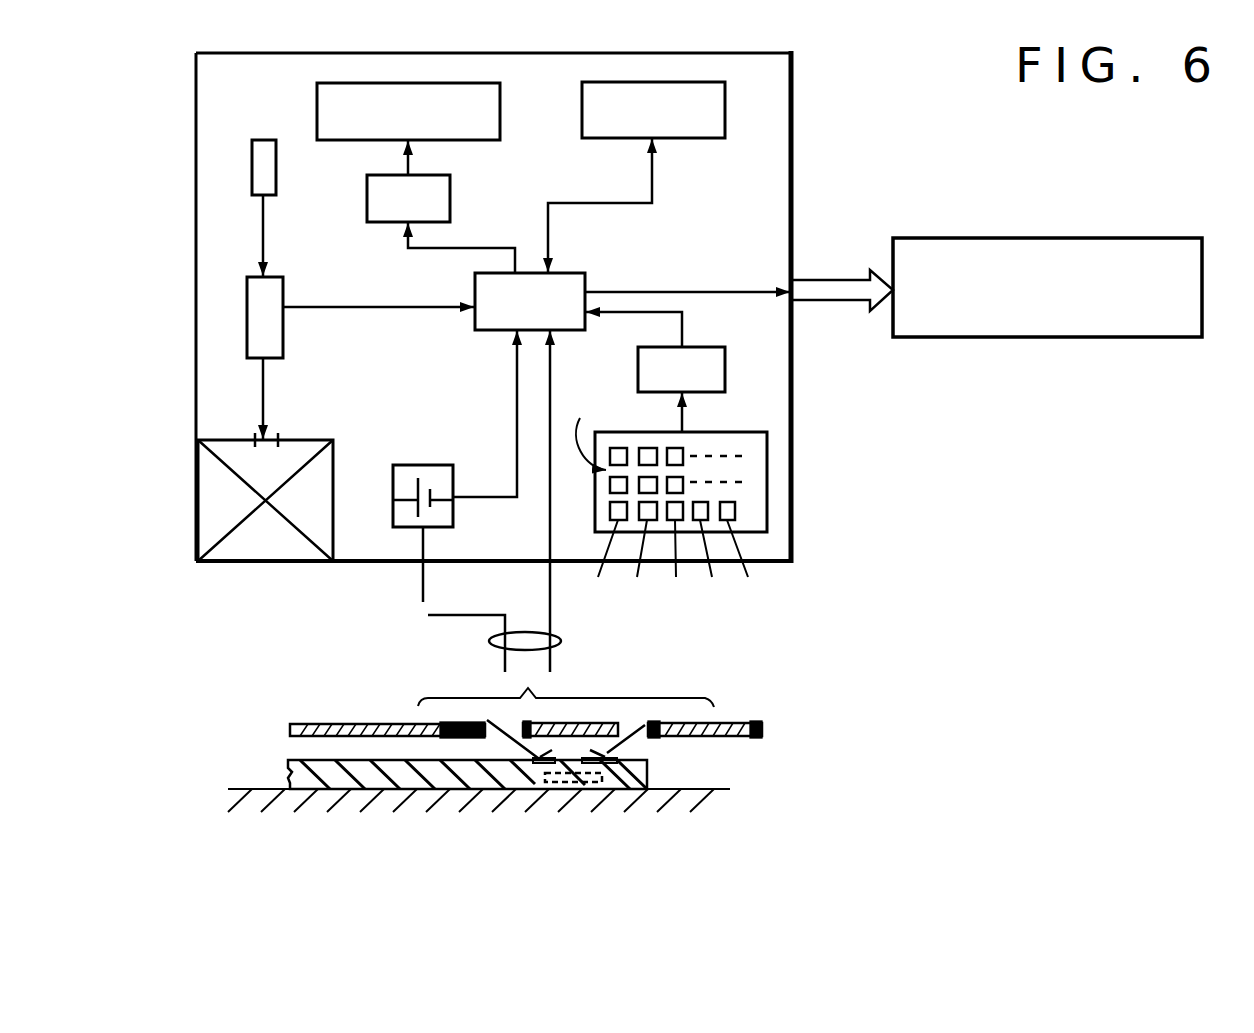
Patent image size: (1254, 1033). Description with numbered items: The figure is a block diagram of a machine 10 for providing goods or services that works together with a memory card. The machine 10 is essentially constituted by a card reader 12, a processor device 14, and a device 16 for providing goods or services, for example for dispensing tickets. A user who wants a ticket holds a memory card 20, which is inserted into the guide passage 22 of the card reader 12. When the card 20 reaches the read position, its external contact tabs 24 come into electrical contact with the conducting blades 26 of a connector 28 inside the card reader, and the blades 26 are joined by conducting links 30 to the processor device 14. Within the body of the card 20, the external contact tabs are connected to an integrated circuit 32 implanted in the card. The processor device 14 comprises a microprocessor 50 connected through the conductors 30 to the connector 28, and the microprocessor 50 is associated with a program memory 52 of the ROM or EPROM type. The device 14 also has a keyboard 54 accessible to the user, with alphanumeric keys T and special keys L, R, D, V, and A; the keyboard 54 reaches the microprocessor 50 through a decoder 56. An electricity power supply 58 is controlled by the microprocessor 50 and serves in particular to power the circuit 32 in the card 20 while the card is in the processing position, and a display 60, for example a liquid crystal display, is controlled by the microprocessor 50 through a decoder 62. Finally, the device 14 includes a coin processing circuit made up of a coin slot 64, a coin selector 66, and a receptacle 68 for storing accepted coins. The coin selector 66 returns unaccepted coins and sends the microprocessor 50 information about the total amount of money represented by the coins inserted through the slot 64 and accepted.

The machine 10 is at (861, 569).
The card reader 12 is at (712, 763).
The processor device 14 is at (773, 142).
The device for providing goods or services 16 is at (1113, 337).
The memory card 20 is at (377, 773).
The guide passage 22 is at (343, 727).
The external contact tabs 24 is at (535, 763).
The conducting blades 26 is at (503, 737).
The connector 28 is at (628, 729).
The conducting links 30 is at (488, 645).
The integrated circuit 32 is at (565, 790).
The microprocessor 50 is at (528, 273).
The program memory 52 is at (703, 82).
The keyboard 54 is at (767, 472).
The decoder 56 is at (725, 368).
The electricity power supply 58 is at (403, 527).
The display 60 is at (425, 83).
The decoder 62 is at (367, 195).
The coin slot 64 is at (252, 165).
The coin selector 66 is at (247, 330).
The receptacle 68 is at (198, 478).